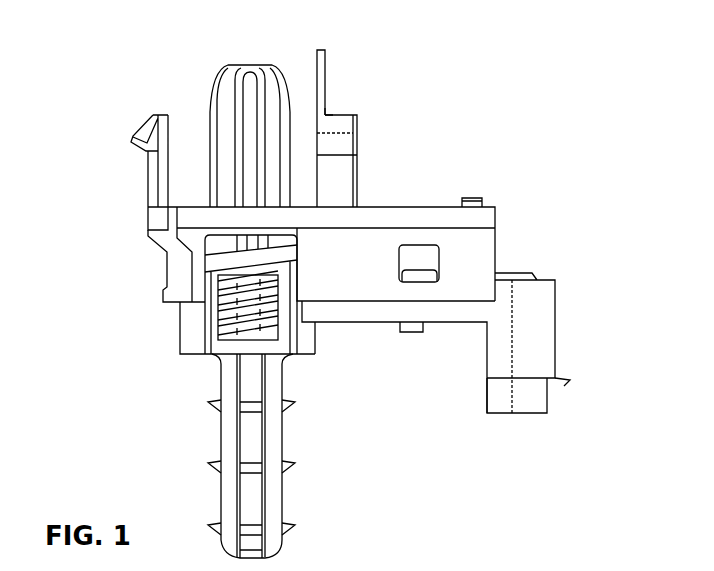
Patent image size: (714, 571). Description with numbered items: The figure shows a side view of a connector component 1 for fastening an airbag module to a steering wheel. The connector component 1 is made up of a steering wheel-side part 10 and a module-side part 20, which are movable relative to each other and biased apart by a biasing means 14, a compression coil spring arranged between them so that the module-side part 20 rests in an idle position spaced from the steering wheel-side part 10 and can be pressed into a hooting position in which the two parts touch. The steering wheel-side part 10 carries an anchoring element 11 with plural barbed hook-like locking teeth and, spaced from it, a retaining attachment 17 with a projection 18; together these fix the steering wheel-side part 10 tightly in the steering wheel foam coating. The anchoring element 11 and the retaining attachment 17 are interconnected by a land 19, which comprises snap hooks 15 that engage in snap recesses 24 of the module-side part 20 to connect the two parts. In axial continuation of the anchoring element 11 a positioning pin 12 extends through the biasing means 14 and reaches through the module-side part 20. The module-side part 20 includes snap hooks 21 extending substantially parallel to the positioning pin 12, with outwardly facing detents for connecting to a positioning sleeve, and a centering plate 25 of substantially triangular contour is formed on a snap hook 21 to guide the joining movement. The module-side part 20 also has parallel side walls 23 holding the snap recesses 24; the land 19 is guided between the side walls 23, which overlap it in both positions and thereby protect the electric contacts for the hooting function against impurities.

The connector component 1 is at (559, 133).
The steering wheel-side part 10 is at (548, 327).
The anchoring element 11 is at (228, 435).
The positioning pin 12 is at (231, 91).
The biasing means 14 is at (273, 320).
The snap hooks 15 is at (425, 282).
The retaining attachment 17 is at (538, 397).
The projection 18 is at (567, 383).
The land 19 is at (367, 313).
The module-side part 20 is at (338, 183).
The snap hooks 21 is at (142, 148).
The side walls 23 is at (463, 275).
The snap recesses 24 is at (425, 253).
The centering plate 25 is at (323, 80).